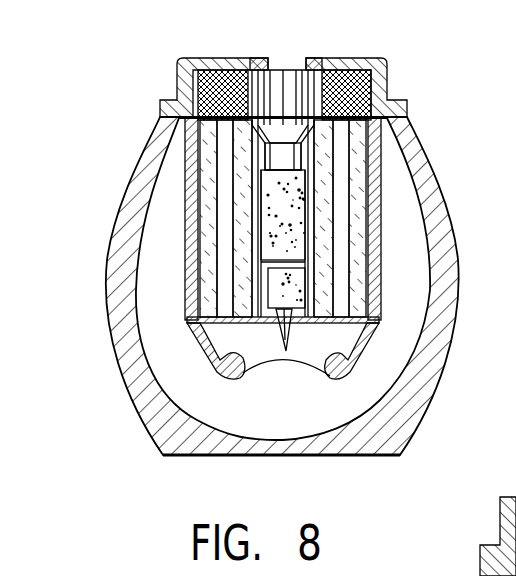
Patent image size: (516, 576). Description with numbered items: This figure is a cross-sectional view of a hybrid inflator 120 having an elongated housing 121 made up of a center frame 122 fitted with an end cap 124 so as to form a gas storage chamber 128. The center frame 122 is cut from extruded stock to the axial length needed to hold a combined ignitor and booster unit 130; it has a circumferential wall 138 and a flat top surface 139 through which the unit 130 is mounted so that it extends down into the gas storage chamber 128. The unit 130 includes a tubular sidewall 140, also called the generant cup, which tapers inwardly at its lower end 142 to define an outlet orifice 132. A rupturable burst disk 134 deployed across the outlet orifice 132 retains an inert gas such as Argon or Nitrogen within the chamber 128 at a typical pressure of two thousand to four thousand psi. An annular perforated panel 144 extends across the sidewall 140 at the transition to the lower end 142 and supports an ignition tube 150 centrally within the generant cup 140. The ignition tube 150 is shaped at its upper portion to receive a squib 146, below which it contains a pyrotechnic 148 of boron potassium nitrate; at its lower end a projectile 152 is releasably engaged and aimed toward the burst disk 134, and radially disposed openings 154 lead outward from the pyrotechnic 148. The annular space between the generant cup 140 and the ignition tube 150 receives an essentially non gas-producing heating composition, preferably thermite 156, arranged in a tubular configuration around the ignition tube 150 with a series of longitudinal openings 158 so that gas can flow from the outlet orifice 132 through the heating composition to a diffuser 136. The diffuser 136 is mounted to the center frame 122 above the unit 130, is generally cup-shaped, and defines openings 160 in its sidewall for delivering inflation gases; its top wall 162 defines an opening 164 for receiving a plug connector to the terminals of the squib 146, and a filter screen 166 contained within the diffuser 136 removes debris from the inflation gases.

The inflator 120 is at (72, 112).
The elongated housing 121 is at (146, 309).
The center frame 122 is at (110, 357).
The end cap 124 is at (222, 438).
The gas storage chamber 128 is at (323, 415).
The combined ignitor and booster unit 130 is at (166, 285).
The outlet orifice 132 is at (214, 374).
The burst disk 134 is at (162, 444).
The diffuser 136 is at (390, 63).
The circumferential wall 138 is at (120, 275).
The flat top surface 139 is at (405, 130).
The tubular sidewall 140 is at (187, 232).
The lower end 142 is at (398, 380).
The annular perforated panel 144 is at (385, 343).
The squib 146 is at (283, 105).
The pyrotechnic 148 is at (300, 181).
The ignition tube 150 is at (350, 286).
The projectile 152 is at (282, 354).
The radially disposed openings 154 is at (342, 228).
The thermite 156 is at (187, 193).
The longitudinal openings 158 is at (224, 152).
The openings 160 is at (182, 90).
The top wall 162 is at (209, 58).
The opening 164 is at (270, 58).
The filter screen 166 is at (345, 72).